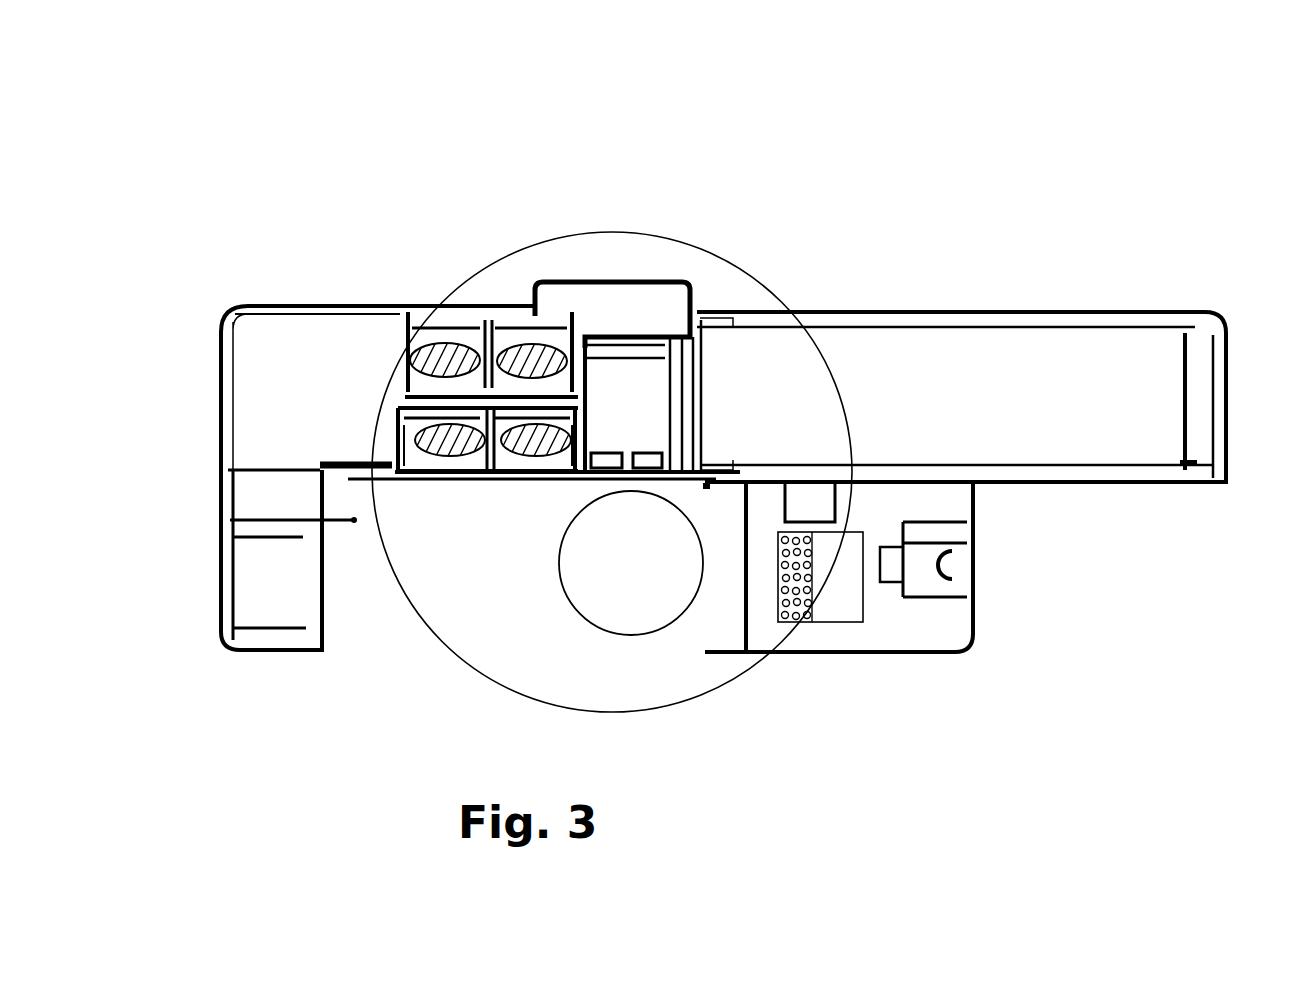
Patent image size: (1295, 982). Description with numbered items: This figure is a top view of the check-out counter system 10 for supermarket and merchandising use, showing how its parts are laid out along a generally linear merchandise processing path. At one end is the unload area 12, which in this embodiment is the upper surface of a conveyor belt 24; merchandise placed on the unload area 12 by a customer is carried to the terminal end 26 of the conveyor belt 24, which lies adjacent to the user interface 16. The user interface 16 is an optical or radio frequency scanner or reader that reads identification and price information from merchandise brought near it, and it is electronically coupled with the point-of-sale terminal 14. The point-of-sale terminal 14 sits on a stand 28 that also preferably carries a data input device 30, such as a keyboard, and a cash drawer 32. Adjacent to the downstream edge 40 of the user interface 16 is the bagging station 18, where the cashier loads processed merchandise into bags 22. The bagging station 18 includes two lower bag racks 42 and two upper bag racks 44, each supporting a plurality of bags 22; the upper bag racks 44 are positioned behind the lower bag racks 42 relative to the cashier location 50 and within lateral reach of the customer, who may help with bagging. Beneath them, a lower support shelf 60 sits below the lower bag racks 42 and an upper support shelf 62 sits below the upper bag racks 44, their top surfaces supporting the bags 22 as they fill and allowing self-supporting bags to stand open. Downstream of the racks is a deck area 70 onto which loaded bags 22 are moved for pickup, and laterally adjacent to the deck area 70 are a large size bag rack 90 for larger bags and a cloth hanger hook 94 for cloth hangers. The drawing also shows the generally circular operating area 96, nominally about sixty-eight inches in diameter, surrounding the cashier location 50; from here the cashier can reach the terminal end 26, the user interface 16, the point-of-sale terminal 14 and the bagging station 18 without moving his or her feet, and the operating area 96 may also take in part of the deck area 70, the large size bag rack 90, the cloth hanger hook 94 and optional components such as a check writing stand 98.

The check-out counter system 10 is at (922, 252).
The unload area 12 is at (1147, 381).
The point-of-sale terminal 14 is at (858, 633).
The user interface 16 is at (662, 312).
The bagging station 18 is at (412, 350).
The bags 22 is at (403, 358).
The conveyor belt 24 is at (995, 388).
The terminal end 26 is at (703, 388).
The stand 28 is at (885, 630).
The data input device 30 is at (797, 614).
The cash drawer 32 is at (748, 567).
The downstream edge 40 is at (560, 478).
The lower bag racks 42 is at (552, 475).
The upper bag racks 44 is at (562, 352).
The cashier location 50 is at (677, 605).
The lower support shelf 60 is at (403, 360).
The upper support shelf 62 is at (551, 340).
The deck area 70 is at (303, 396).
The large size bag rack 90 is at (232, 617).
The cloth hanger hook 94 is at (345, 523).
The operating area 96 is at (655, 678).
The check writing stand 98 is at (630, 305).